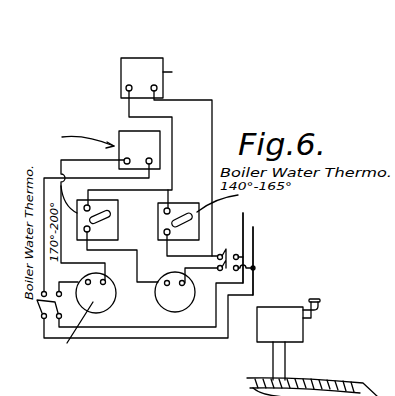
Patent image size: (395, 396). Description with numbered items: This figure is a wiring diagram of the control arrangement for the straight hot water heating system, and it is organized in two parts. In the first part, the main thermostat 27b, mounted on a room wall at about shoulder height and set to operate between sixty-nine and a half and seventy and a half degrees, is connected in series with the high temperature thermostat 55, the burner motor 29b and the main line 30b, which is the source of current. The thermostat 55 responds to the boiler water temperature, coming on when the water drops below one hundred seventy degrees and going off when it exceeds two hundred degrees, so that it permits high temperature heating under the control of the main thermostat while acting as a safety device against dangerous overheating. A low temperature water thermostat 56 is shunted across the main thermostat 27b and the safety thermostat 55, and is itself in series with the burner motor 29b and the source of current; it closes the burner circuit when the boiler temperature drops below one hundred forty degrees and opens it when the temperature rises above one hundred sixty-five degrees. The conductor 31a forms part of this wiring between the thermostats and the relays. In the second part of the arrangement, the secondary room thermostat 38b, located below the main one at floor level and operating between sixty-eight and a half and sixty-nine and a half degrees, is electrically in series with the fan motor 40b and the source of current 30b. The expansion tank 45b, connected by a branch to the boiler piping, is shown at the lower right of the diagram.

The main thermostat 27b is at (121, 63).
The secondary room thermostat 38b is at (119, 139).
The conductor wire 31a is at (212, 152).
The high temperature thermostat 55 is at (121, 230).
The low temperature water thermostat 56 is at (192, 193).
The main line 30b is at (254, 228).
The fan motor 40b is at (103, 295).
The burner motor 29b is at (177, 300).
The expansion tank 45b is at (268, 317).